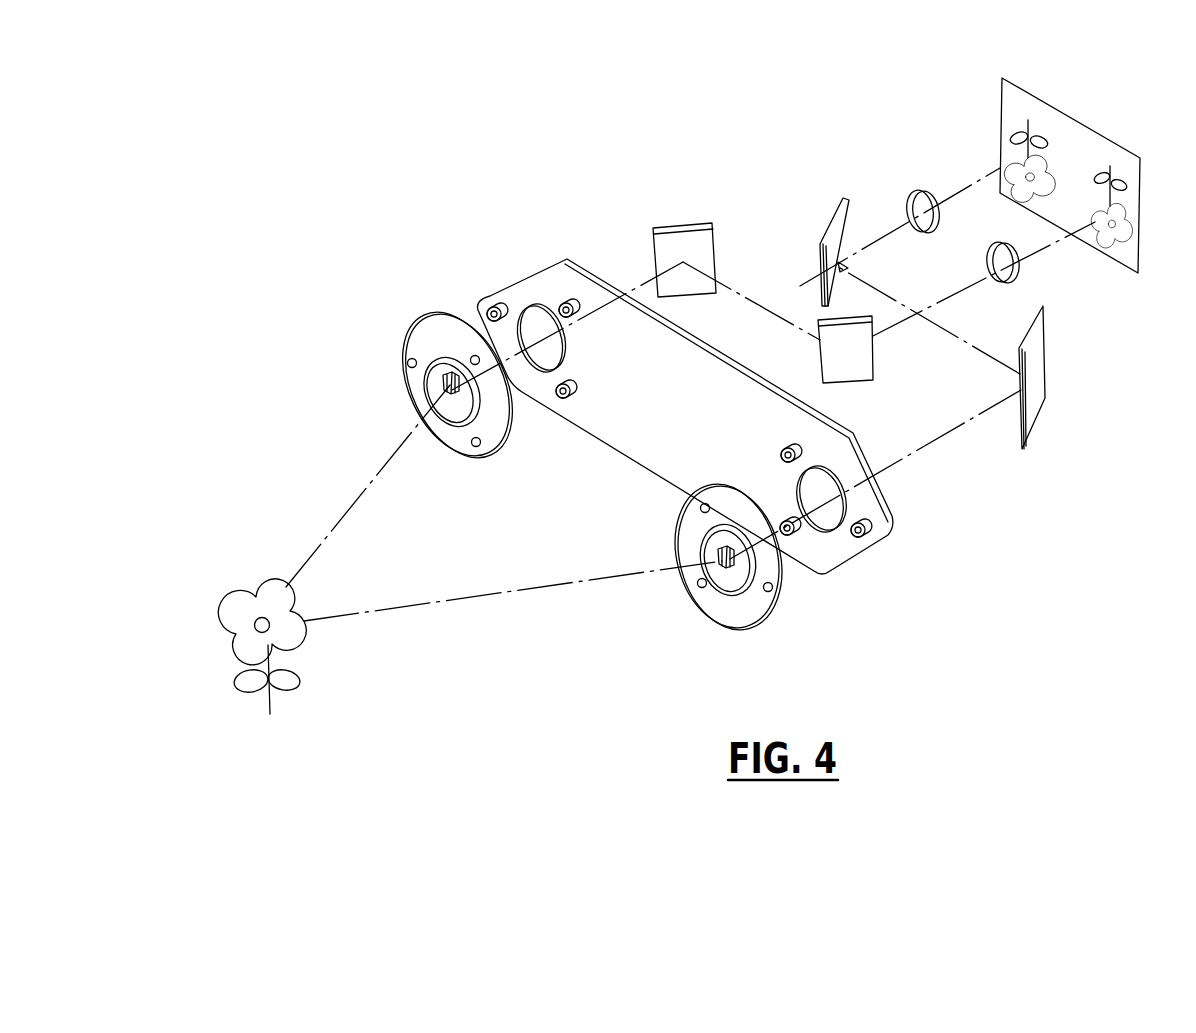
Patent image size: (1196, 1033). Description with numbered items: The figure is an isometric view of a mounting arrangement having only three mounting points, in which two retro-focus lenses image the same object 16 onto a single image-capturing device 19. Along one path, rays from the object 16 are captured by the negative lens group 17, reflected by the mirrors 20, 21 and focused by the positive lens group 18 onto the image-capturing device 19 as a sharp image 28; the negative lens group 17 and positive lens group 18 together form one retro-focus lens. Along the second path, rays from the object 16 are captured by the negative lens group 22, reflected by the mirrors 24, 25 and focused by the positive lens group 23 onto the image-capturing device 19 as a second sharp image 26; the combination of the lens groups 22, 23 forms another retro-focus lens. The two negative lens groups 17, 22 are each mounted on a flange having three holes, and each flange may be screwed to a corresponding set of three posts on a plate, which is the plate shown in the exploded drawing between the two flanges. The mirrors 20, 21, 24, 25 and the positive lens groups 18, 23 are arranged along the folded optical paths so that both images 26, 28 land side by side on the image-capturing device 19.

The object 16 is at (275, 600).
The negative lens group 17 is at (732, 583).
The positive lens group 18 is at (912, 206).
The image-capturing device 19 is at (1073, 143).
The mirror 20 is at (1034, 402).
The mirror 21 is at (845, 233).
The negative lens group 22 is at (436, 392).
The positive lens group 23 is at (1012, 280).
The mirror 24 is at (692, 241).
The mirror 25 is at (845, 372).
The sharp image 26 is at (1117, 182).
The sharp image 28 is at (1021, 139).